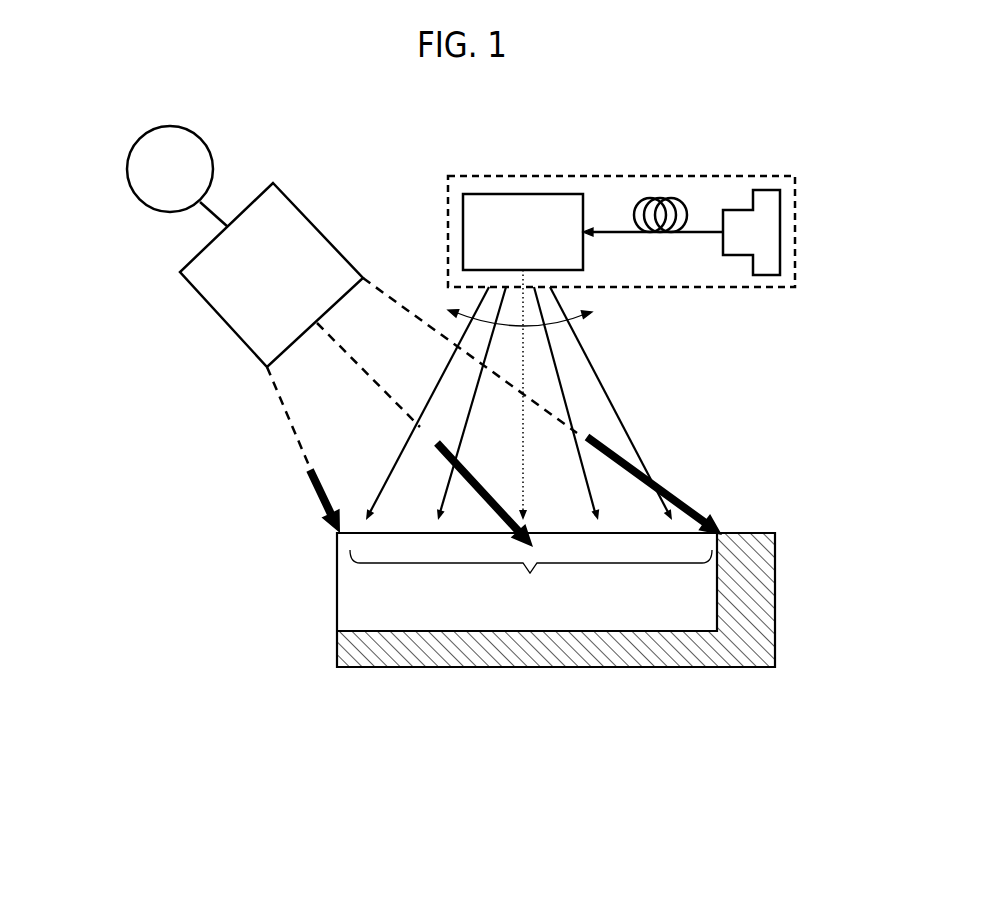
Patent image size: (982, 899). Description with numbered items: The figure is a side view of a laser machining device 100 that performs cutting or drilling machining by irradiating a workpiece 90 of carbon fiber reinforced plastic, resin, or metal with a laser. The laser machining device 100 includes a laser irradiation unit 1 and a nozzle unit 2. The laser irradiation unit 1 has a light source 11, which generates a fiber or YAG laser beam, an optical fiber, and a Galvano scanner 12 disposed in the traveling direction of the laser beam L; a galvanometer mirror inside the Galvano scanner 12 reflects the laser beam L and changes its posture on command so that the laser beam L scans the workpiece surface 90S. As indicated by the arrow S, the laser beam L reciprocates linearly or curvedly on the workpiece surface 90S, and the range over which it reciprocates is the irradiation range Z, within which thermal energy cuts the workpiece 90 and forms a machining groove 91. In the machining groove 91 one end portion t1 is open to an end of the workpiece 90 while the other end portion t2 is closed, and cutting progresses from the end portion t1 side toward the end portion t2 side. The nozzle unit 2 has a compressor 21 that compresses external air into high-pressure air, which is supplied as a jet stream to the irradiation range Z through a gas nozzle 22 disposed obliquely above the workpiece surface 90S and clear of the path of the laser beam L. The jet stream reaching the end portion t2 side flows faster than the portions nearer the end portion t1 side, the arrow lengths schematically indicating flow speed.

The laser machining device 100 is at (605, 118).
The laser irradiation unit 1 is at (653, 225).
The light source 11 is at (770, 234).
The Galvano scanner 12 is at (508, 207).
The laser beam L is at (608, 393).
The scanning arrow S is at (531, 313).
The nozzle unit 2 is at (215, 230).
The compressor 21 is at (138, 152).
The gas nozzle 22 is at (228, 313).
The workpiece 90 is at (544, 590).
The workpiece surface 90S is at (753, 532).
The machining groove 91 is at (408, 640).
The end portion t1 is at (337, 631).
The end portion t2 is at (713, 612).
The irradiation range Z is at (531, 579).